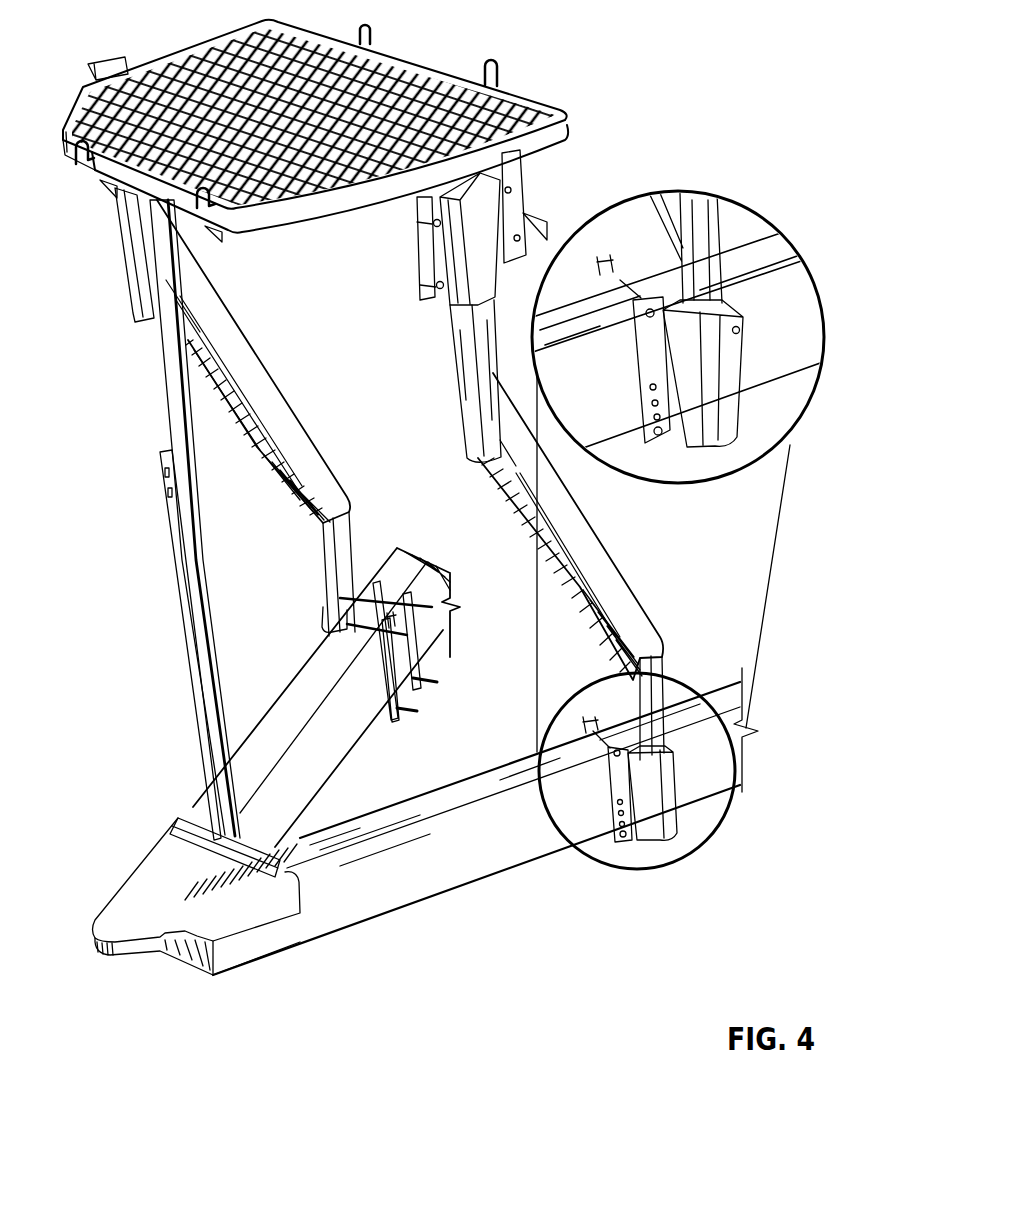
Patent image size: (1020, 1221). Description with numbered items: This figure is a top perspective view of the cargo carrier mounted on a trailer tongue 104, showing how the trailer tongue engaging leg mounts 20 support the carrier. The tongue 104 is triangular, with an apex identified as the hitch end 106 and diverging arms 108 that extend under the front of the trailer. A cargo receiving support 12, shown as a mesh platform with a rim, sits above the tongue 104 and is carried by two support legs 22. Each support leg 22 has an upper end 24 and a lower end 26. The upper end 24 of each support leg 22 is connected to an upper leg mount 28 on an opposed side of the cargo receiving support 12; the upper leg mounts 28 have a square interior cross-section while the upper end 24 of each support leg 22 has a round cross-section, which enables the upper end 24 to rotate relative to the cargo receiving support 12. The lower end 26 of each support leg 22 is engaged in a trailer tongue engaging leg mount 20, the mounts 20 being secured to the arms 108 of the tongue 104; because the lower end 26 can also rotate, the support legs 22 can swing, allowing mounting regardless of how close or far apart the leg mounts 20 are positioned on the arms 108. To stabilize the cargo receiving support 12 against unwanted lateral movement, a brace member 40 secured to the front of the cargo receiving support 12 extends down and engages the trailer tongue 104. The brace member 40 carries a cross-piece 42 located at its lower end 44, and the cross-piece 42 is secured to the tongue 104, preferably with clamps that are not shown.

The cargo receiving support 12 is at (525, 107).
The trailer tongue engaging leg mount 20 is at (337, 623).
The support leg 22 is at (490, 486).
The upper end 24 is at (140, 270).
The lower end 26 is at (353, 540).
The upper leg mount 28 is at (487, 247).
The brace member 40 is at (150, 297).
The cross-piece 42 is at (198, 823).
The lower end 44 is at (220, 781).
The tongue 104 is at (490, 873).
The hitch end 106 is at (130, 947).
The arms 108 is at (358, 719).